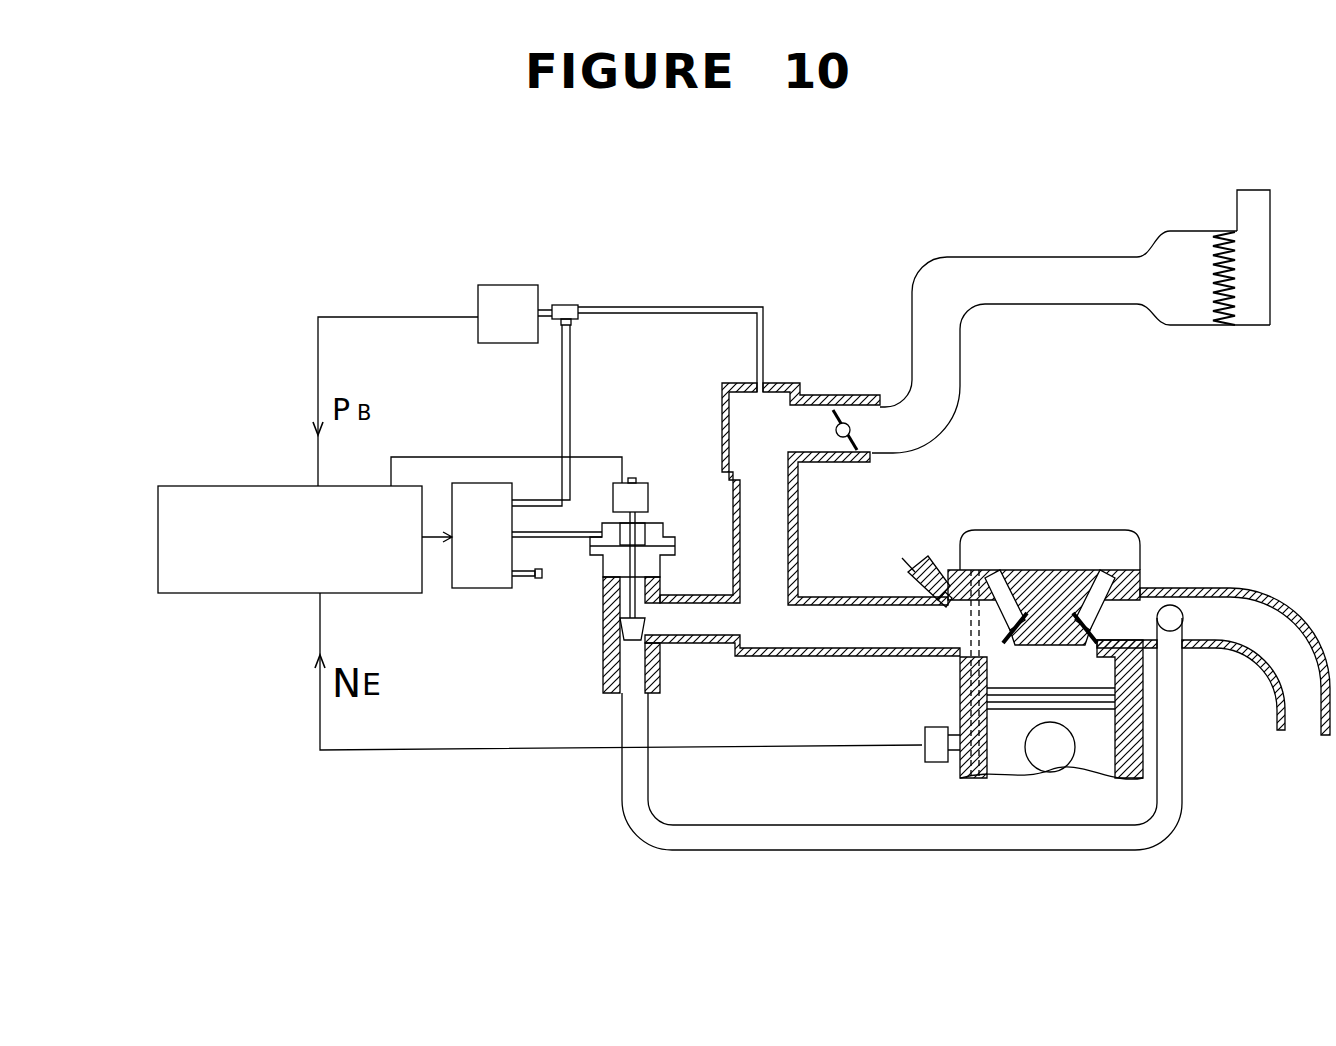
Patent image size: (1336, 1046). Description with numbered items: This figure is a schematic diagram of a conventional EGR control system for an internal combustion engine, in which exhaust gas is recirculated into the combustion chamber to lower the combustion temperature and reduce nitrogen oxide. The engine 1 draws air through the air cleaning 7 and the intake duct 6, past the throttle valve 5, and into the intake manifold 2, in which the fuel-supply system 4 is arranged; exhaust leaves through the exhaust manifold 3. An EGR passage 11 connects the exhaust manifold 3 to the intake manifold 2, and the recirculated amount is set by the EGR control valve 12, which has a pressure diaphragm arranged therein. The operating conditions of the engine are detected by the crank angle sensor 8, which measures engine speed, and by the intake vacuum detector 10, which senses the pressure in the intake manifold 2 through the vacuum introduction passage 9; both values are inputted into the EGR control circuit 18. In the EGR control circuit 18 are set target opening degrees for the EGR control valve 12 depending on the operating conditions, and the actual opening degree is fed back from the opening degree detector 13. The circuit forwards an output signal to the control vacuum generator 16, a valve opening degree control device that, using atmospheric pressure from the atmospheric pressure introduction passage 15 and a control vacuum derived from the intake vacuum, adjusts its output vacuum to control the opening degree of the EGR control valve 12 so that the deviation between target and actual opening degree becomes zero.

The engine 1 is at (1145, 707).
The intake manifold 2 is at (793, 622).
The exhaust manifold 3 is at (1267, 633).
The fuel-supply system 4 is at (903, 562).
The throttle valve 5 is at (855, 393).
The intake duct 6 is at (1066, 255).
The air cleaning 7 is at (1193, 230).
The crank angle sensor 8 is at (930, 763).
The vacuum introduction passage 9 is at (662, 308).
The intake vacuum detector 10 is at (516, 284).
The EGR passage 11 is at (743, 837).
The EGR control valve 12 is at (598, 565).
The opening degree detector 13 is at (643, 483).
The atmospheric pressure introduction passage 15 is at (522, 577).
The control vacuum generator 16 is at (477, 590).
The EGR control circuit 18 is at (247, 595).